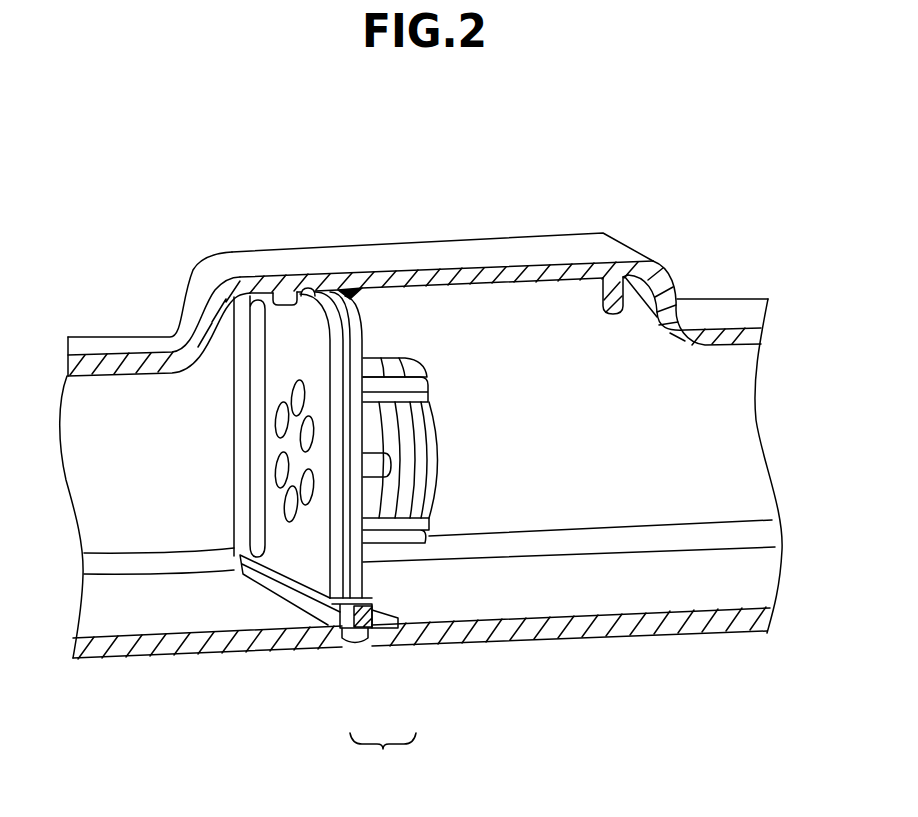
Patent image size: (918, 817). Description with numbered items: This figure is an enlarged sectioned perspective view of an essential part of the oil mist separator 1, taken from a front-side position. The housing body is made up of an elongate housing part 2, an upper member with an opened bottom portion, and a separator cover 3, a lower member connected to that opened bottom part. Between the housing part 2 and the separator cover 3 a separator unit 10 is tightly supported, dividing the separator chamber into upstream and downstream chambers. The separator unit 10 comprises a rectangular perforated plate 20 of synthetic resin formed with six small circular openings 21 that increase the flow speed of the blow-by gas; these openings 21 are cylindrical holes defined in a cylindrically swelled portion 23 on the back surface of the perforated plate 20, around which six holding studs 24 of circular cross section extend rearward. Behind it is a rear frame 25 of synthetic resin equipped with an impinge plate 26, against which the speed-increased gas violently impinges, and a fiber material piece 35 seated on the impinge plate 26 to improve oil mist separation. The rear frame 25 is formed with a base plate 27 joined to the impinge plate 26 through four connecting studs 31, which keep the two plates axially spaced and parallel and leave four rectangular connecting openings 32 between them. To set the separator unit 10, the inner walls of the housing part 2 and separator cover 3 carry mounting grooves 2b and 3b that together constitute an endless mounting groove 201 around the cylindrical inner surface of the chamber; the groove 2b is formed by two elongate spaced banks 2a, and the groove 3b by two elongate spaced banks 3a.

The oil mist separator 1 is at (540, 198).
The elongate housing part 2 is at (118, 350).
The banks 2a is at (283, 277).
The mounting groove 2b is at (315, 290).
The separator cover 3 is at (643, 598).
The banks 3a is at (322, 602).
The mounting groove 3b is at (373, 647).
The separator unit 10 is at (460, 433).
The rectangular perforated plate 20 is at (283, 353).
The circular openings 21 is at (290, 510).
The cylindrically swelled portion 23 is at (371, 492).
The holding studs 24 is at (390, 466).
The rear frame 25 is at (448, 362).
The impinge plate 26 is at (430, 413).
The base plate 27 is at (338, 300).
The connecting studs 31 is at (413, 537).
The connecting openings 32 is at (377, 342).
The fiber material piece 35 is at (396, 368).
The endless mounting groove 201 is at (383, 758).